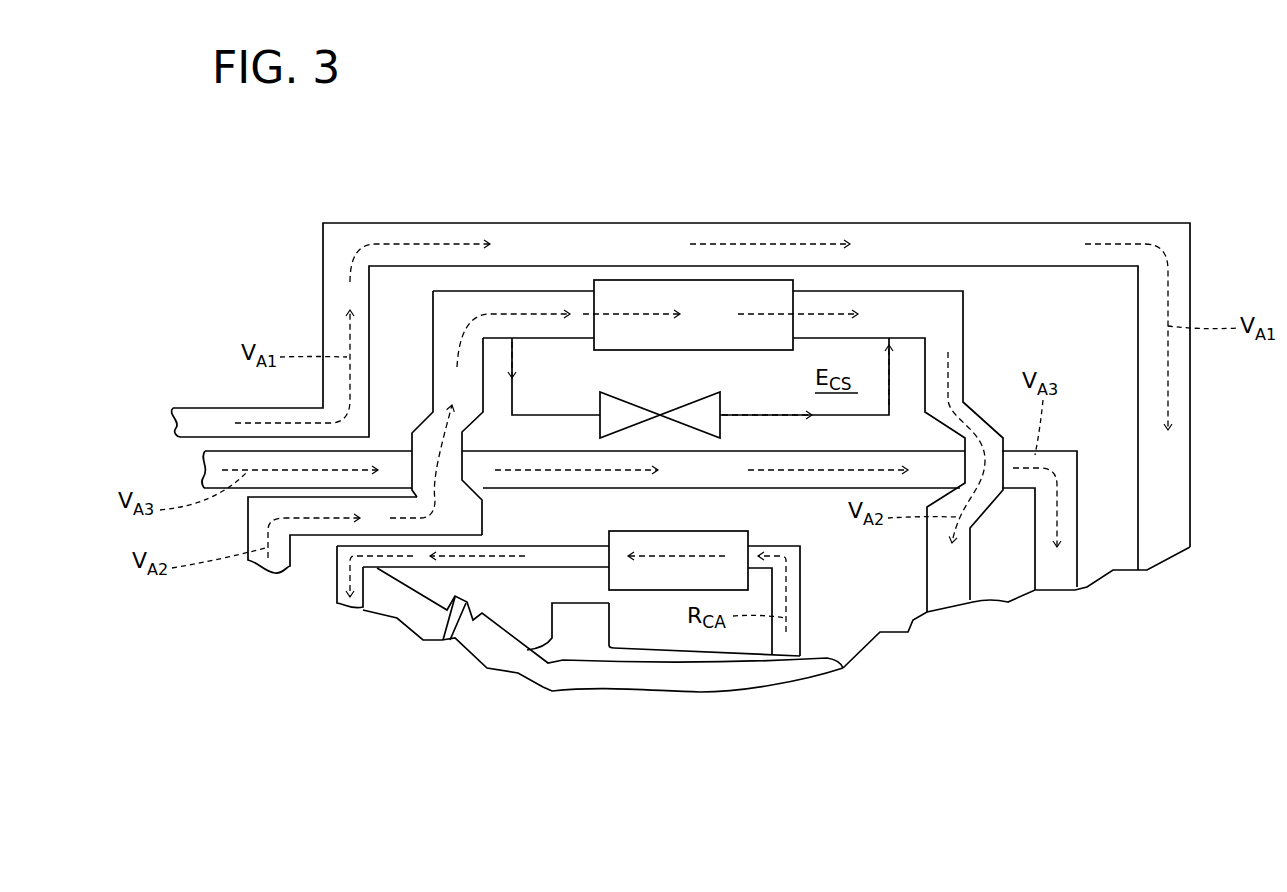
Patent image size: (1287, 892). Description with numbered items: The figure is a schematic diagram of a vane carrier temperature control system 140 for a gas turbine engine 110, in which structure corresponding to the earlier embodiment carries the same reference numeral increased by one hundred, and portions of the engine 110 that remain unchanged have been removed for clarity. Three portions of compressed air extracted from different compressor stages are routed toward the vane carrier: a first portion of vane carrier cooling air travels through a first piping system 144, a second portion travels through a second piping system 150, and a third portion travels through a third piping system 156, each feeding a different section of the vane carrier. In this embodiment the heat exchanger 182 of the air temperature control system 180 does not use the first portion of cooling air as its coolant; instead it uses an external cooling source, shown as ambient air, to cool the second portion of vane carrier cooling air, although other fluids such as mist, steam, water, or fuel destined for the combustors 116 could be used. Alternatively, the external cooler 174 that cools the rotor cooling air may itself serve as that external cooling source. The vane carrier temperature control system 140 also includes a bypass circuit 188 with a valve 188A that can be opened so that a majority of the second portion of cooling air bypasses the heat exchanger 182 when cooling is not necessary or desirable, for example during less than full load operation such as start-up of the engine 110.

The engine 110 is at (1052, 130).
The combustors 116 is at (500, 628).
The vane carrier temperature control system 140 is at (712, 122).
The first piping system 144 is at (491, 223).
The second piping system 150 is at (248, 527).
The third piping system 156 is at (205, 456).
The external cooler 174 is at (682, 530).
The air temperature control system 180 is at (735, 278).
The heat exchanger 182 is at (640, 290).
The bypass circuit 188 is at (547, 415).
The valve 188A is at (693, 407).